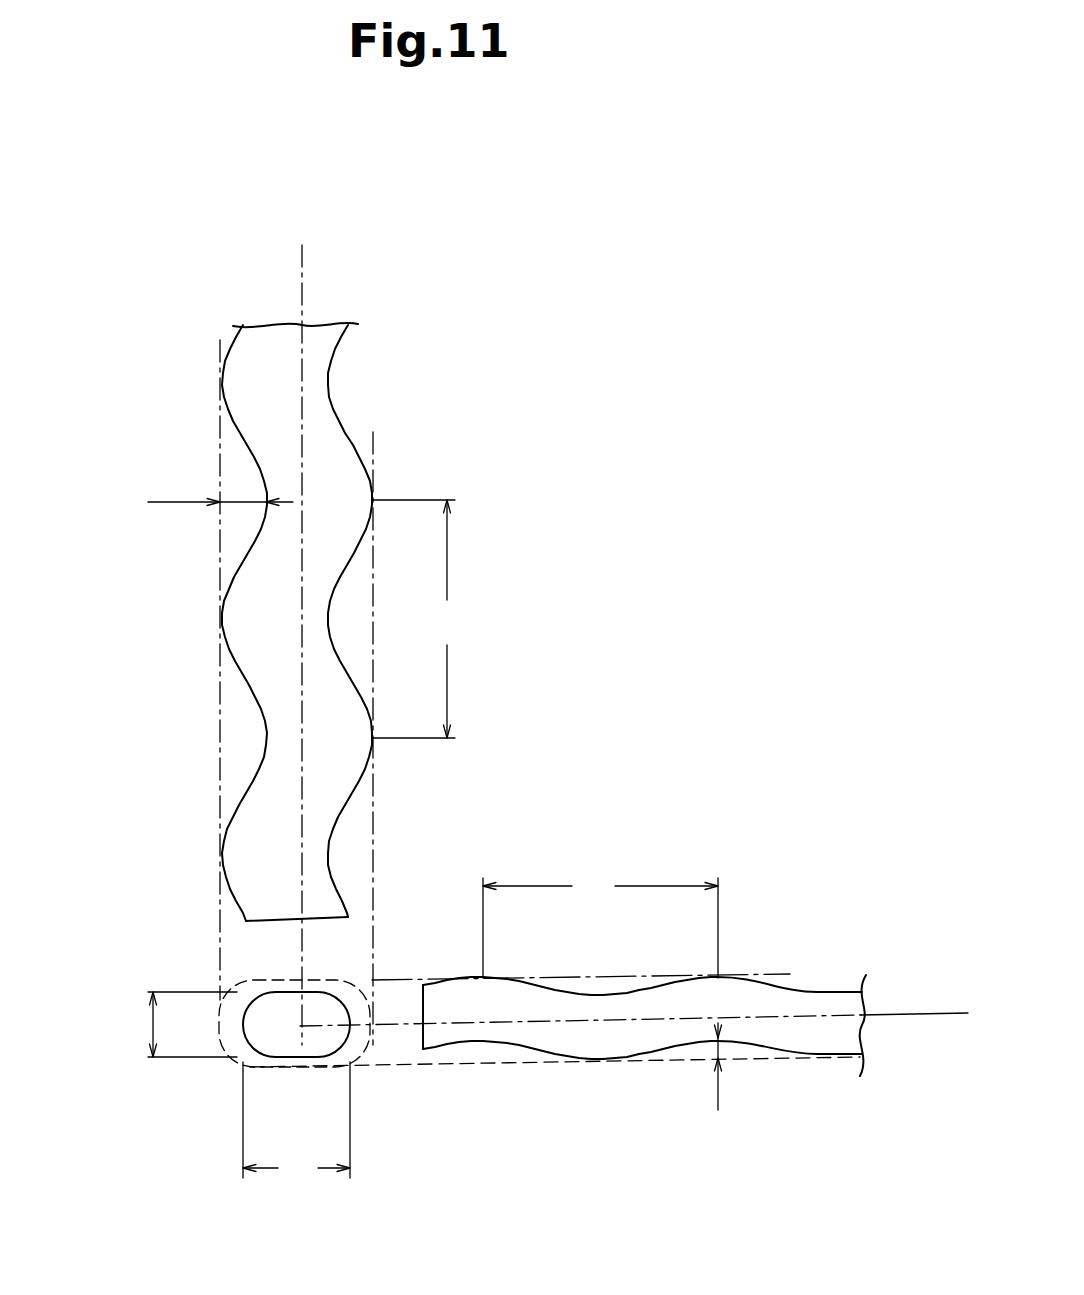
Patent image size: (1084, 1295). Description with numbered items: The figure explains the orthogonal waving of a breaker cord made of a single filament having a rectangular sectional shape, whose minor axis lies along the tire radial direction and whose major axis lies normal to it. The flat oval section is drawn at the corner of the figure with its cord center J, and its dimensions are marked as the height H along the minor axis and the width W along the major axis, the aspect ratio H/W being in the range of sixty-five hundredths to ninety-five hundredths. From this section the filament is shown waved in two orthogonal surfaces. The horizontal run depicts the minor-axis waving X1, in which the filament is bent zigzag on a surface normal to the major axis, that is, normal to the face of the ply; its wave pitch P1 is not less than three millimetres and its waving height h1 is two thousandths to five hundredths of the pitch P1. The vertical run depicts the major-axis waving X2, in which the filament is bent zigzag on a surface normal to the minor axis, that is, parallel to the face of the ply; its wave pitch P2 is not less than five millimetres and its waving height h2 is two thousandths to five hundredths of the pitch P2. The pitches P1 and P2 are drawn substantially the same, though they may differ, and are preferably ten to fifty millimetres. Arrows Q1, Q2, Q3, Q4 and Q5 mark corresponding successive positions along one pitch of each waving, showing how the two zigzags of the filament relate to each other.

The minor-axis waving X1 is at (757, 948).
The major-axis waving X2 is at (402, 397).
The cord center J is at (298, 1028).
The filament height H is at (150, 1028).
The filament width W is at (296, 1123).
The wave pitch of minor-axis waving P1 is at (600, 923).
The wave pitch of major-axis waving P2 is at (420, 619).
The waving height of minor-axis waving h1 is at (718, 1047).
The waving height of major-axis waving h2 is at (220, 485).
The wave position Q1 is at (199, 920).
The wave position Q2 is at (199, 864).
The wave position Q3 is at (199, 800).
The wave position Q4 is at (199, 742).
The wave position Q5 is at (199, 686).